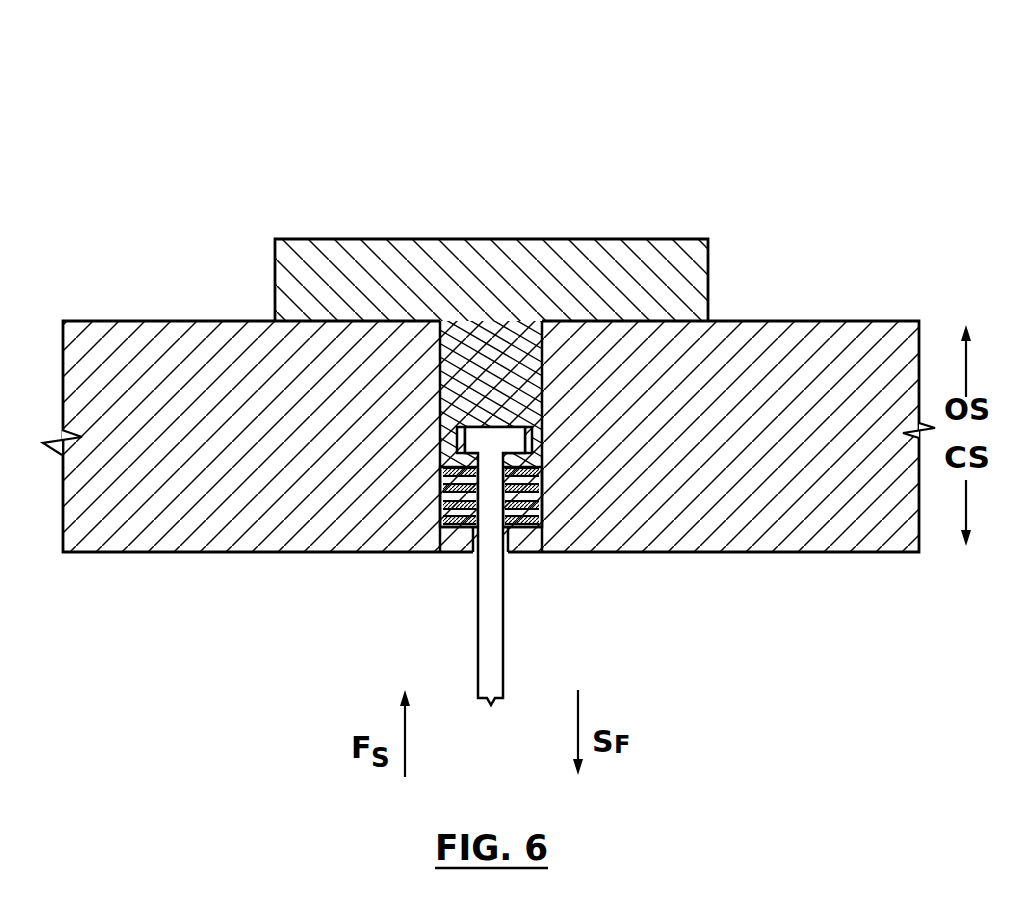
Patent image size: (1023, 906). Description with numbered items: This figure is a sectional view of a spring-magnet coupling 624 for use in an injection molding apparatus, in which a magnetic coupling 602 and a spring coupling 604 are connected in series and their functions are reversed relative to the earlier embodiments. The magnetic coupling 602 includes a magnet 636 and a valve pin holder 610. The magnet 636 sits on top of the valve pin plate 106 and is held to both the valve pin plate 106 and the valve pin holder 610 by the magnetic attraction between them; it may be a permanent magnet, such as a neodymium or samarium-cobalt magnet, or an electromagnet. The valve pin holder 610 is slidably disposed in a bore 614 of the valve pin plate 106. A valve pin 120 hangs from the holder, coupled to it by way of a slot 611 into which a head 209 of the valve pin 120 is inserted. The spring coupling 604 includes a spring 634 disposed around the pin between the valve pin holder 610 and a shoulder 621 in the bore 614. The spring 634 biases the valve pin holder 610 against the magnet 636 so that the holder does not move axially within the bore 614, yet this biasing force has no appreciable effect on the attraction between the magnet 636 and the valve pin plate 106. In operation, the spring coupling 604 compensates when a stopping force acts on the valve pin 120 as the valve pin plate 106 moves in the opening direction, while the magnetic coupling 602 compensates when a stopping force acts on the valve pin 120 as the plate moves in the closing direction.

The spring-magnet coupling 624 is at (733, 130).
The magnetic coupling 602 is at (421, 425).
The valve pin holder 610 is at (463, 337).
The bore 614 is at (533, 342).
The magnet 636 is at (622, 250).
The valve pin plate 106 is at (843, 321).
The head 209 is at (456, 438).
The slot 611 is at (547, 437).
The spring 634 is at (443, 495).
The shoulder 621 is at (450, 528).
The spring coupling 604 is at (550, 503).
The valve pin 120 is at (496, 657).